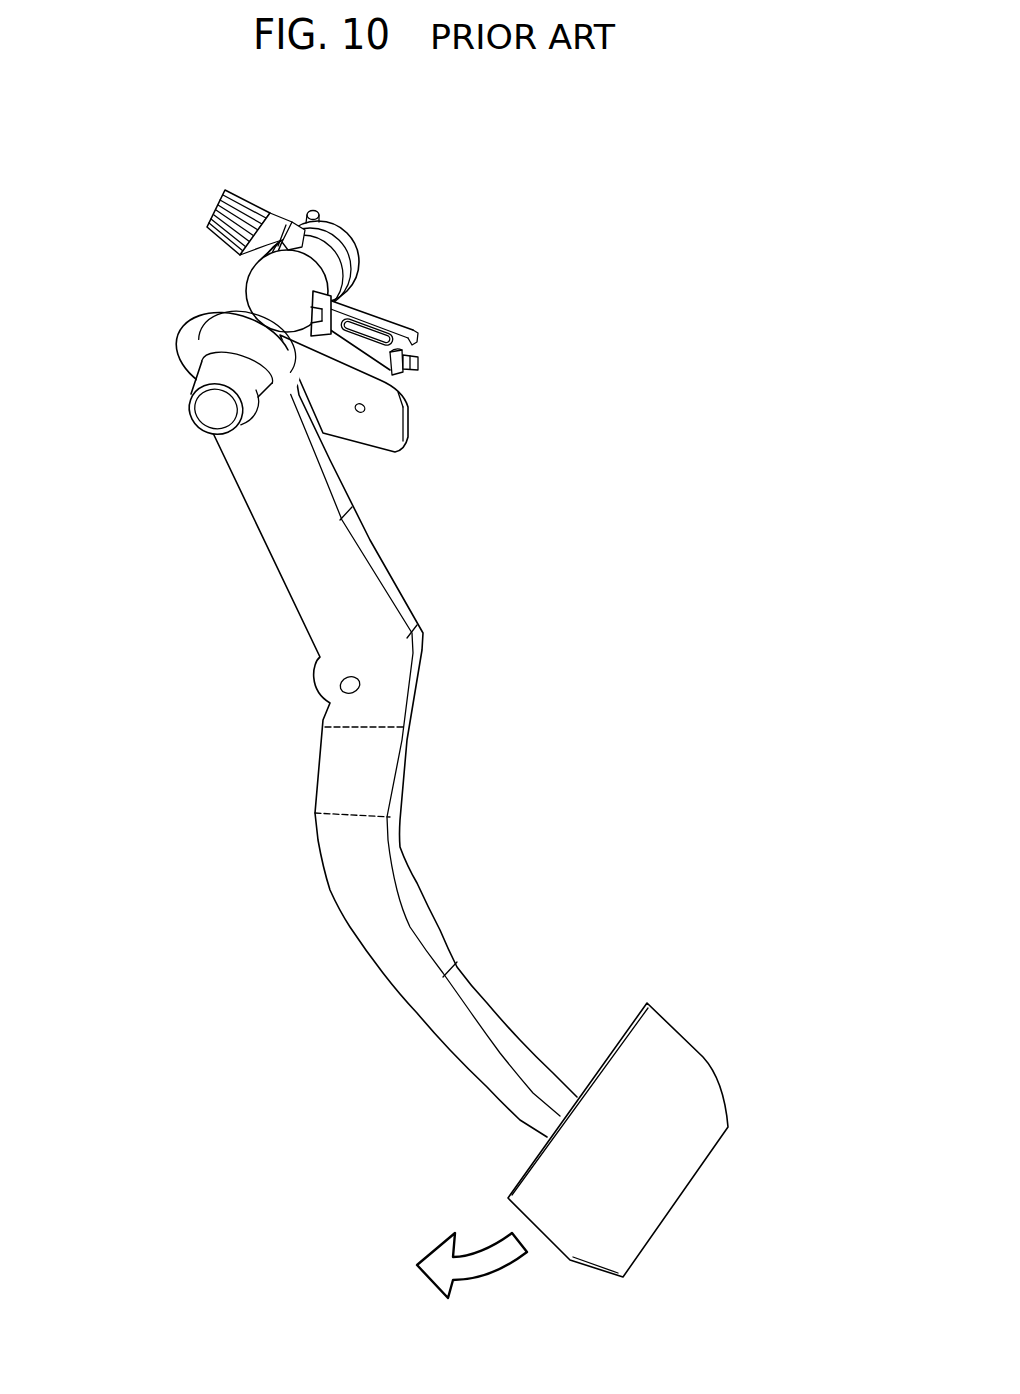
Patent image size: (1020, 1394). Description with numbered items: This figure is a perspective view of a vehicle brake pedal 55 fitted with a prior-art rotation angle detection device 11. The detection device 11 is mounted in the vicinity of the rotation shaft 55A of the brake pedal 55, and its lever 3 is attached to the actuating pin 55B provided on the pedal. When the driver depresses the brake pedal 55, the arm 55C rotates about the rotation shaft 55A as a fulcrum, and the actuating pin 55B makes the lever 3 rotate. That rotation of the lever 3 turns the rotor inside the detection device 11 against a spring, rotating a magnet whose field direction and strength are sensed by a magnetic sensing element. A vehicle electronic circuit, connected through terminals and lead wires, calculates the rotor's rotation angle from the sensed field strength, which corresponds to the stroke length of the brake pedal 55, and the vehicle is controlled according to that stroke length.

The rotation angle detection device 11 is at (342, 228).
The lever 3 is at (396, 320).
The brake pedal 55 is at (677, 1050).
The rotation shaft 55A is at (207, 412).
The actuating pin 55B is at (393, 367).
The arm 55C is at (332, 840).